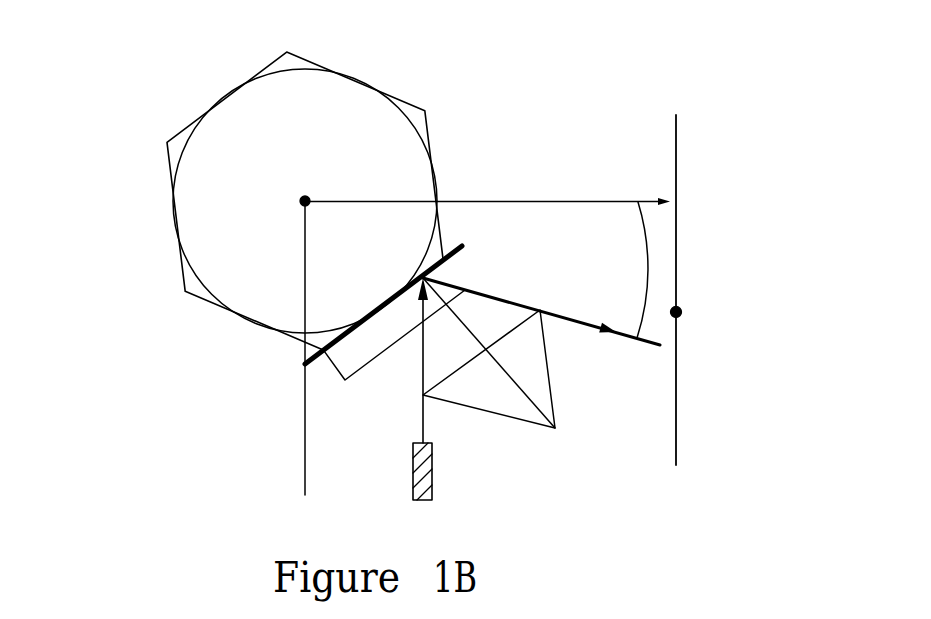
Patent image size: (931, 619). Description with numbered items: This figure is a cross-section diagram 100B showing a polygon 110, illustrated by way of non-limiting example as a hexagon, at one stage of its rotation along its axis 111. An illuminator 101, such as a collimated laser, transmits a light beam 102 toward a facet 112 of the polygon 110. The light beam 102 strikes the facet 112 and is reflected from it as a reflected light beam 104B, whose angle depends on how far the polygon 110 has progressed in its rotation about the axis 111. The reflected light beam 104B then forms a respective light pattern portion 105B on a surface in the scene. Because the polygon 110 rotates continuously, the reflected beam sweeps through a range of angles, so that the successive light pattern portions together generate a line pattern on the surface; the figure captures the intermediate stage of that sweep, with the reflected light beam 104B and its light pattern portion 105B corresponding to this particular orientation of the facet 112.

The cross-section diagram 100B is at (126, 300).
The polygon 110 is at (182, 77).
The axis 111 is at (305, 196).
The facet 112 is at (456, 258).
The illuminator 101 is at (432, 477).
The light beam 102 is at (423, 430).
The reflected light beam 104B is at (558, 313).
The light pattern portion 105B is at (681, 314).